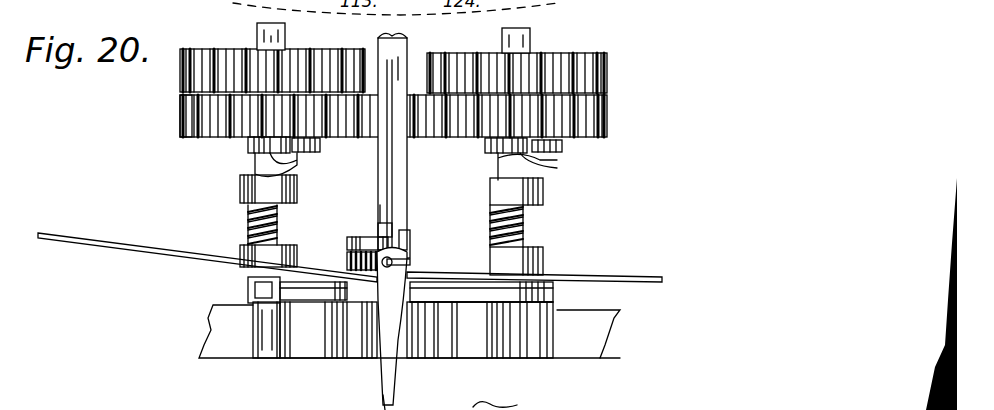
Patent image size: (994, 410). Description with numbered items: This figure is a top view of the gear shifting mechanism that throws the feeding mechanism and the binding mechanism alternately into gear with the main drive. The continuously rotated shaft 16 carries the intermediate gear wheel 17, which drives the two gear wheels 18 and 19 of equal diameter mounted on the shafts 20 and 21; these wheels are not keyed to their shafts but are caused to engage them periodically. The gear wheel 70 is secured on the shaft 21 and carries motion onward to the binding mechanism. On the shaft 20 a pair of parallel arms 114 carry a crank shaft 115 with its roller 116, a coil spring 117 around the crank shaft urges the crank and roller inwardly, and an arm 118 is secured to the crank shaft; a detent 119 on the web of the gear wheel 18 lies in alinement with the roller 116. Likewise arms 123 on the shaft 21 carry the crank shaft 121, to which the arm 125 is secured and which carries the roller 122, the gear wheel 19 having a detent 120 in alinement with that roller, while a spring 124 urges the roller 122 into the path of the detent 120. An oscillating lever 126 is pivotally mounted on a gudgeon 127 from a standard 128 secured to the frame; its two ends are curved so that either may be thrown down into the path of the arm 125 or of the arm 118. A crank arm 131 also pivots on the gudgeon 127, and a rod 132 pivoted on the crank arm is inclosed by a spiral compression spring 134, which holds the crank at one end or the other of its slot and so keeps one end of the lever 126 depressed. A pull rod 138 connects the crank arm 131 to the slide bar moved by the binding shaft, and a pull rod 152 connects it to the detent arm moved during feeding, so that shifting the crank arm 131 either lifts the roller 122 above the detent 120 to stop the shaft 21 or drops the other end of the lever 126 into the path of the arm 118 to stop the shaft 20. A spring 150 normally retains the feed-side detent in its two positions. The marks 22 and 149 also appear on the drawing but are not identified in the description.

The shaft 16 is at (392, 202).
The gear wheel 17 is at (405, 137).
The gear wheel 18 is at (172, 125).
The gear wheel 19 is at (610, 118).
The shaft 20 is at (257, 35).
The shaft 21 is at (537, 40).
The upper left gear 22 is at (172, 56).
The gear wheel 70 is at (613, 75).
The parallel arms 114 is at (295, 243).
The crank shaft 115 is at (293, 163).
The roller 116 is at (320, 143).
The coil spring 117 is at (247, 212).
The arm 118 is at (247, 287).
The detent 119 is at (248, 147).
The detent 120 is at (483, 147).
The crank shaft 121 is at (532, 168).
The roller 122 is at (562, 150).
The arms 123 is at (543, 257).
The spring 124 is at (495, 225).
The arm 125 is at (537, 295).
The oscillating lever 126 is at (462, 292).
The gudgeon 127 is at (392, 227).
The standard 128 is at (388, 345).
The crank arm 131 is at (405, 245).
The rod 132 is at (402, 401).
The spiral compression spring 134 is at (353, 258).
The pull rod 138 is at (668, 280).
The link 149 is at (517, 407).
The spring 150 is at (623, 407).
The pull rod 152 is at (67, 241).